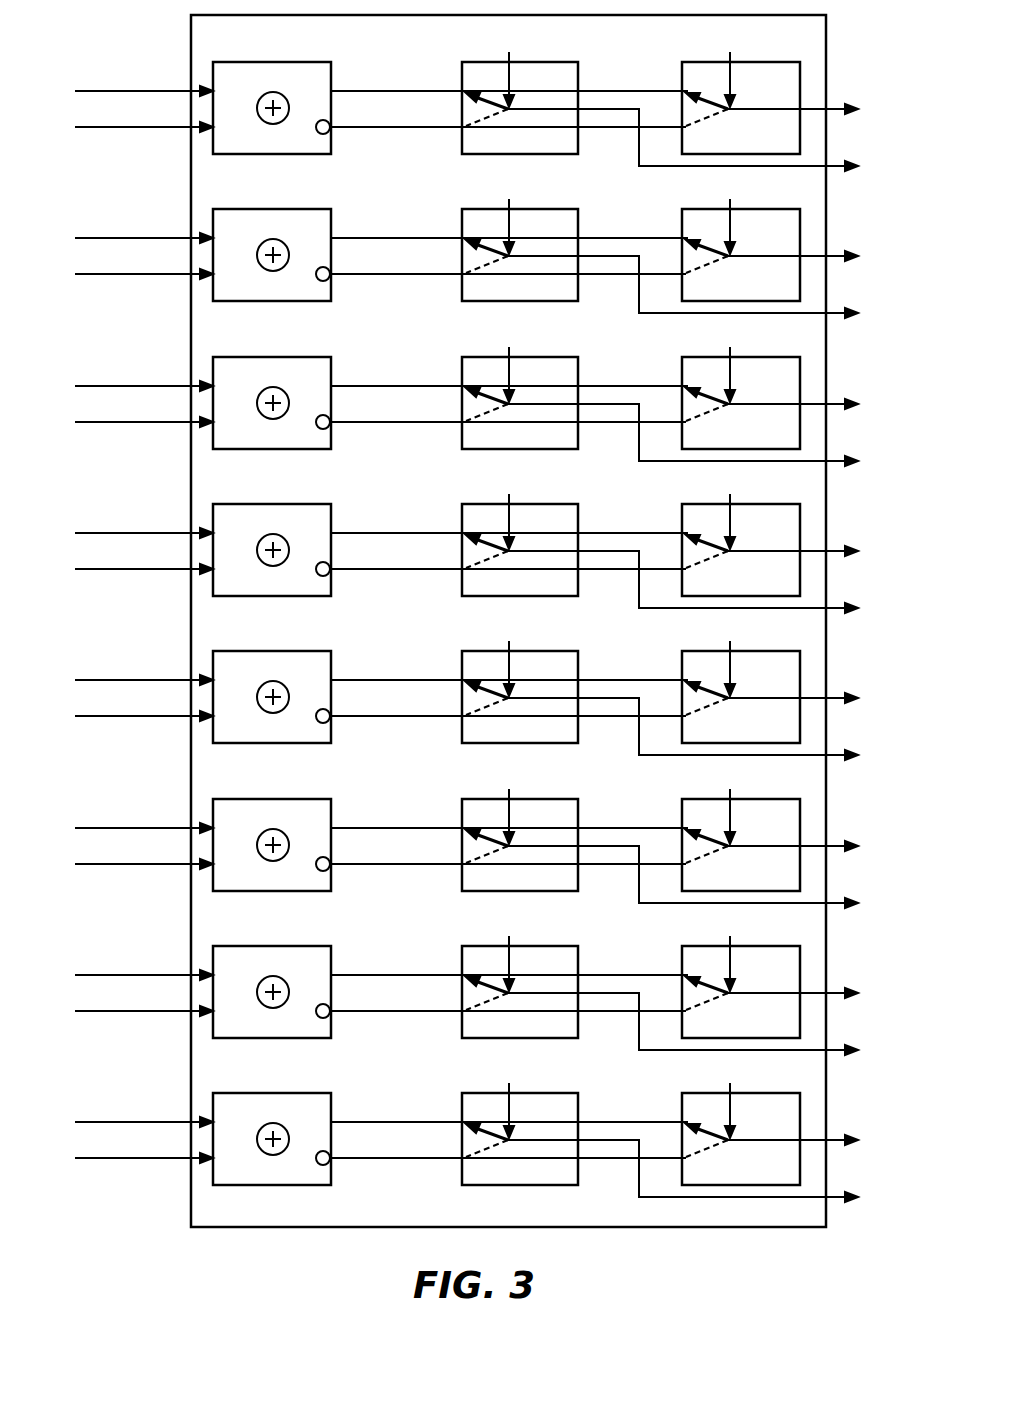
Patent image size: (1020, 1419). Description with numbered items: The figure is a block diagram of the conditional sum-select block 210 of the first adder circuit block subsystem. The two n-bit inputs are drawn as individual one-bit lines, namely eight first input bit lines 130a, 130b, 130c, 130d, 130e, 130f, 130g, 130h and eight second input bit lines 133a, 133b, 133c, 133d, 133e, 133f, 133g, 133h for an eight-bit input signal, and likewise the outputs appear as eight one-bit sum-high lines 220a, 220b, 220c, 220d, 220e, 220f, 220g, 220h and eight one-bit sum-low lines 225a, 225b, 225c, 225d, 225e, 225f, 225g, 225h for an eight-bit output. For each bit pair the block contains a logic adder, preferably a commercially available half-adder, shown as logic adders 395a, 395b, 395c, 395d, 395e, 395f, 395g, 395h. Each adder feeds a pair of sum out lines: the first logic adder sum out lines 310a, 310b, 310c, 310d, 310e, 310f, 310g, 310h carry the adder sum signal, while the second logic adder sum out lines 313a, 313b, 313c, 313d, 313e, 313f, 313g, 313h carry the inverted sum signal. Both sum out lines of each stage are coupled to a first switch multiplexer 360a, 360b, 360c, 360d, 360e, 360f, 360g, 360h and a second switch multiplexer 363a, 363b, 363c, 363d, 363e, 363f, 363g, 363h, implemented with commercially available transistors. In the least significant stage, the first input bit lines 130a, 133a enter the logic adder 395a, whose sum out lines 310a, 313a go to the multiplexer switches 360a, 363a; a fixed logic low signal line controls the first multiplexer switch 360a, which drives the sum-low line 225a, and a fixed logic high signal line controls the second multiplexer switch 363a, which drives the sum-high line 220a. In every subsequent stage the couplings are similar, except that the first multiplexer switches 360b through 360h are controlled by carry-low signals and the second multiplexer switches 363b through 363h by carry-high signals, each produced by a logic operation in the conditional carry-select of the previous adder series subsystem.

The conditional sum-select block 210 is at (379, 1227).
The first input bit line 130a is at (175, 91).
The second input bit line 133a is at (175, 127).
The logic adder 395a is at (275, 62).
The first logic adder sum out line 310a is at (383, 91).
The second logic adder sum out line 313a is at (383, 127).
The first switch multiplexer 360a is at (530, 62).
The second switch multiplexer 363a is at (750, 62).
The sum-high line 220a is at (838, 109).
The sum-low line 225a is at (838, 166).
The first input bit line 130b is at (134, 224).
The second input bit line 133b is at (134, 260).
The logic adder 395b is at (276, 241).
The first logic adder sum out line 310b is at (396, 223).
The second logic adder sum out line 313b is at (396, 258).
The first switch multiplexer 360b is at (528, 238).
The second switch multiplexer 363b is at (696, 238).
The sum-high line 220b is at (816, 245).
The sum-low line 225b is at (706, 291).
The first input bit line 130c is at (134, 372).
The second input bit line 133c is at (134, 408).
The logic adder 395c is at (275, 389).
The first logic adder sum out line 310c is at (396, 371).
The second logic adder sum out line 313c is at (396, 406).
The first switch multiplexer 360c is at (527, 386).
The second switch multiplexer 363c is at (695, 386).
The sum-high line 220c is at (816, 393).
The sum-low line 225c is at (705, 439).
The first input bit line 130d is at (134, 519).
The second input bit line 133d is at (134, 555).
The logic adder 395d is at (276, 536).
The first logic adder sum out line 310d is at (396, 518).
The second logic adder sum out line 313d is at (396, 553).
The first switch multiplexer 360d is at (528, 533).
The second switch multiplexer 363d is at (696, 533).
The sum-high line 220d is at (816, 540).
The sum-low line 225d is at (706, 586).
The first input bit line 130e is at (134, 666).
The second input bit line 133e is at (134, 702).
The logic adder 395e is at (275, 683).
The first logic adder sum out line 310e is at (396, 665).
The second logic adder sum out line 313e is at (396, 700).
The first switch multiplexer 360e is at (527, 680).
The second switch multiplexer 363e is at (695, 680).
The sum-high line 220e is at (816, 687).
The sum-low line 225e is at (705, 733).
The first input bit line 130f is at (134, 814).
The second input bit line 133f is at (134, 850).
The logic adder 395f is at (274, 831).
The first logic adder sum out line 310f is at (396, 813).
The second logic adder sum out line 313f is at (396, 848).
The first switch multiplexer 360f is at (526, 828).
The second switch multiplexer 363f is at (694, 828).
The sum-high line 220f is at (816, 835).
The sum-low line 225f is at (705, 881).
The first input bit line 130g is at (134, 961).
The second input bit line 133g is at (134, 997).
The logic adder 395g is at (276, 978).
The first logic adder sum out line 310g is at (396, 960).
The second logic adder sum out line 313g is at (396, 995).
The first switch multiplexer 360g is at (528, 975).
The second switch multiplexer 363g is at (696, 975).
The sum-high line 220g is at (816, 982).
The sum-low line 225g is at (706, 1028).
The first input bit line 130h is at (134, 1108).
The second input bit line 133h is at (134, 1144).
The logic adder 395h is at (276, 1125).
The first logic adder sum out line 310h is at (396, 1107).
The second logic adder sum out line 313h is at (396, 1142).
The first switch multiplexer 360h is at (528, 1122).
The second switch multiplexer 363h is at (696, 1122).
The sum-high line 220h is at (817, 1129).
The sum-low line 225h is at (706, 1175).